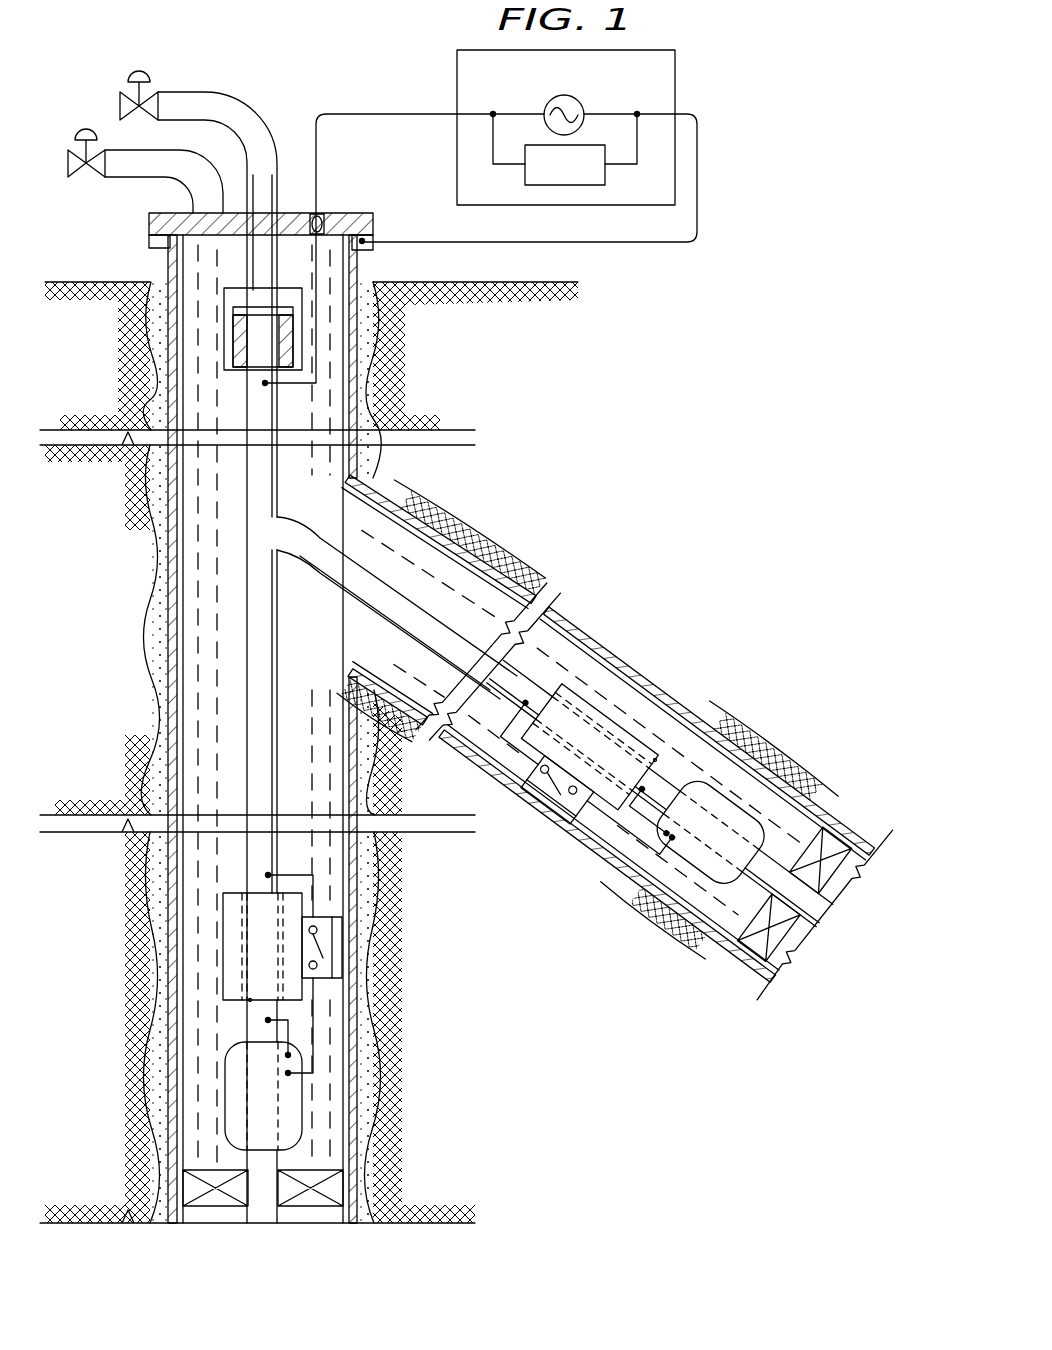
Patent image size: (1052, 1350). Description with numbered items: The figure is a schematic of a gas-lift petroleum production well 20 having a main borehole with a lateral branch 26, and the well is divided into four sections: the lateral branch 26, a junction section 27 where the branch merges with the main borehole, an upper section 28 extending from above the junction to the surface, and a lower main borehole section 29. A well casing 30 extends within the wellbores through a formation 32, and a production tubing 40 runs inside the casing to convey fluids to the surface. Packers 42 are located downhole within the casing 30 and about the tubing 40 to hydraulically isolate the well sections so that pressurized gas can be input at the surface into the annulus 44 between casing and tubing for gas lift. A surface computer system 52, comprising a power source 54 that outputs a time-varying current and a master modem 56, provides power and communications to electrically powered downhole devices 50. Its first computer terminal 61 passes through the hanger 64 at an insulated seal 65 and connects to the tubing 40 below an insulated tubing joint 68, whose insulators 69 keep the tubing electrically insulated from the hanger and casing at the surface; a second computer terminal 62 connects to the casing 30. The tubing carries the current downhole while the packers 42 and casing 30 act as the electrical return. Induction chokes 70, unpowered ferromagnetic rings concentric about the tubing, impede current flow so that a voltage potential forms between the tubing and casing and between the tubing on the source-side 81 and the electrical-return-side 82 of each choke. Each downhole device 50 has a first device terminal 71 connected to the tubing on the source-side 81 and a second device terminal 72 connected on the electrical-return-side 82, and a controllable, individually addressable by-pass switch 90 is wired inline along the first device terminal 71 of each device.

The petroleum production well 20 is at (296, 100).
The lateral branch 26 is at (702, 645).
The junction section 27 is at (448, 497).
The upper section 28 is at (492, 378).
The lower main borehole section 29 is at (428, 978).
The well casing 30 is at (168, 372).
The formation 32 is at (68, 346).
The production tubing 40 is at (200, 92).
The packers 42 is at (202, 1170).
The annulus 44 is at (198, 268).
The downhole devices 50 is at (226, 1110).
The surface computer system 52 is at (678, 96).
The power source 54 is at (585, 108).
The master modem 56 is at (606, 180).
The first computer terminal 61 is at (392, 113).
The second computer terminal 62 is at (400, 242).
The hanger 64 is at (149, 222).
The insulated seal 65 is at (330, 213).
The insulated tubing joint 68 is at (226, 300).
The insulators 69 is at (228, 370).
The induction chokes 70 is at (223, 968).
The first device terminal 71 is at (312, 992).
The second device terminal 72 is at (290, 1033).
The source-side 81 is at (246, 890).
The electrical-return-side 82 is at (244, 1003).
The electrical by-pass switch 90 is at (342, 935).